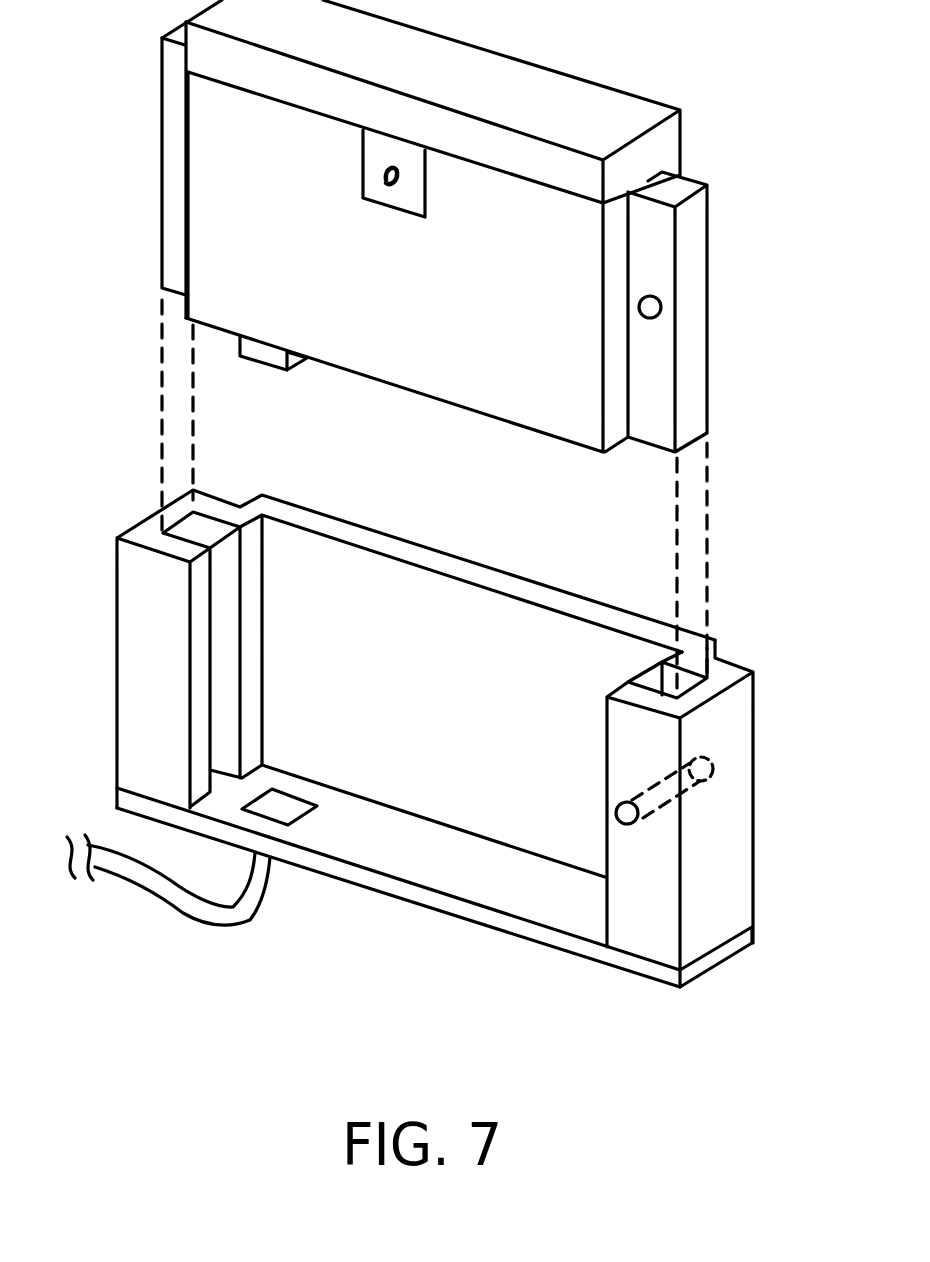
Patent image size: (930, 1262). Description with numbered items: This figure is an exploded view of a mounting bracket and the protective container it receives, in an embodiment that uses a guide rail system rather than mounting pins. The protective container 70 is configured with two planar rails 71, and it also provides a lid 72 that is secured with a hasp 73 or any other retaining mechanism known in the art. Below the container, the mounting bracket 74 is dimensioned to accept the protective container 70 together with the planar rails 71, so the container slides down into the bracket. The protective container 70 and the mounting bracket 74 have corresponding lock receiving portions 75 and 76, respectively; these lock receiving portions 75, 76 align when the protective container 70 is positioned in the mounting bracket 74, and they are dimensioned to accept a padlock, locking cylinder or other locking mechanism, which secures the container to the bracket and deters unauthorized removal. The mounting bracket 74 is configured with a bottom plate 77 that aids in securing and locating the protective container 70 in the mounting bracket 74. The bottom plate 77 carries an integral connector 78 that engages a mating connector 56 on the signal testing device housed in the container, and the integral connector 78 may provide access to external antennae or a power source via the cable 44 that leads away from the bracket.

The cable 44 is at (160, 898).
The mating connector 56 is at (270, 368).
The protective container 70 is at (465, 373).
The planar rails 71 is at (160, 140).
The lid 72 is at (560, 95).
The hasp 73 is at (384, 196).
The mounting bracket 74 is at (733, 758).
The lock receiving portion 75 is at (662, 302).
The lock receiving portion 76 is at (613, 813).
The bottom plate 77 is at (540, 935).
The integral connector 78 is at (293, 817).